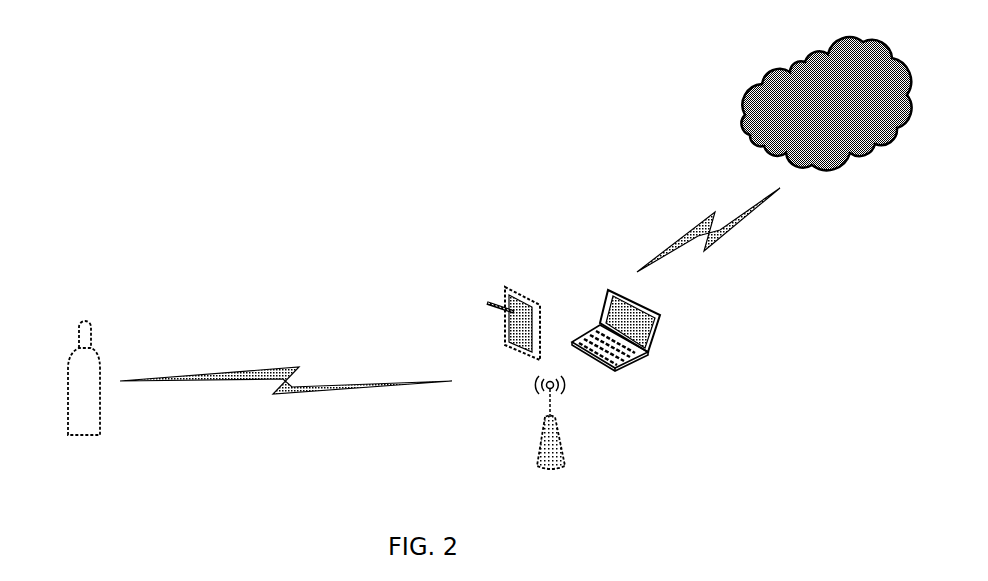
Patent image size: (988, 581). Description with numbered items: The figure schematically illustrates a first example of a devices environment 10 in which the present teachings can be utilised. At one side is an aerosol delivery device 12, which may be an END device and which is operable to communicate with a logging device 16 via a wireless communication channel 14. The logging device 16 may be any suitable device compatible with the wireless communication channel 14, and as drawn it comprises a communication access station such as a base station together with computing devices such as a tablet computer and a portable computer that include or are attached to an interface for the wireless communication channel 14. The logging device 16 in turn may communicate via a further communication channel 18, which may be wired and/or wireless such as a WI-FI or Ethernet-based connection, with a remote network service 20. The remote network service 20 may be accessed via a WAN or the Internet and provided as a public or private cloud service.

The devices environment 10 is at (243, 48).
The aerosol delivery device 12 is at (91, 301).
The communication channel 14 is at (303, 336).
The logging device 16 is at (518, 266).
The communication channel 18 is at (697, 212).
The remote network service 20 is at (768, 59).